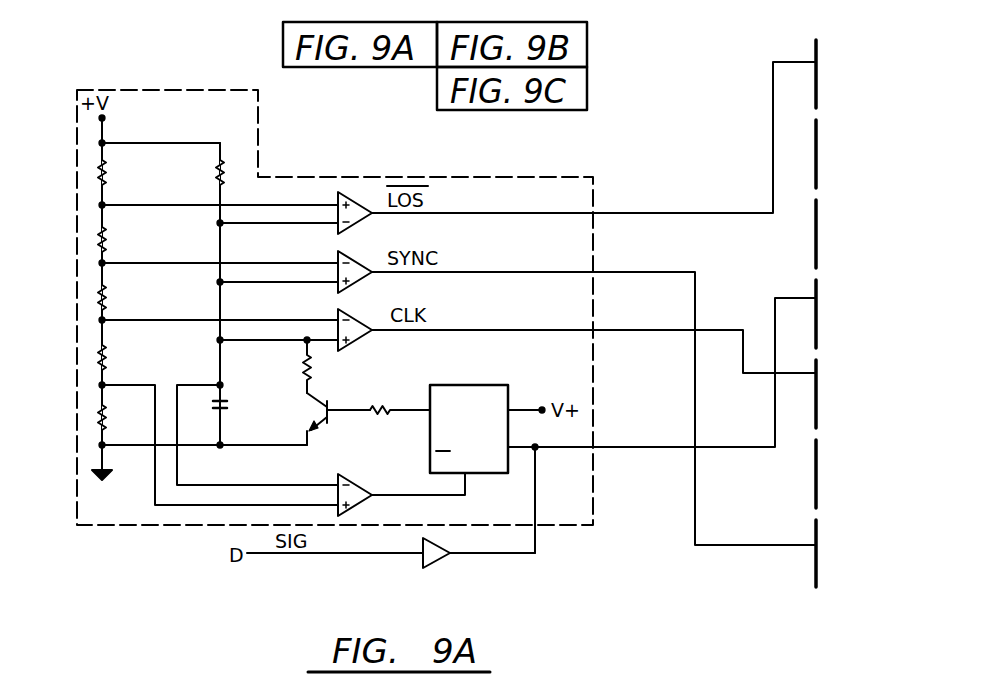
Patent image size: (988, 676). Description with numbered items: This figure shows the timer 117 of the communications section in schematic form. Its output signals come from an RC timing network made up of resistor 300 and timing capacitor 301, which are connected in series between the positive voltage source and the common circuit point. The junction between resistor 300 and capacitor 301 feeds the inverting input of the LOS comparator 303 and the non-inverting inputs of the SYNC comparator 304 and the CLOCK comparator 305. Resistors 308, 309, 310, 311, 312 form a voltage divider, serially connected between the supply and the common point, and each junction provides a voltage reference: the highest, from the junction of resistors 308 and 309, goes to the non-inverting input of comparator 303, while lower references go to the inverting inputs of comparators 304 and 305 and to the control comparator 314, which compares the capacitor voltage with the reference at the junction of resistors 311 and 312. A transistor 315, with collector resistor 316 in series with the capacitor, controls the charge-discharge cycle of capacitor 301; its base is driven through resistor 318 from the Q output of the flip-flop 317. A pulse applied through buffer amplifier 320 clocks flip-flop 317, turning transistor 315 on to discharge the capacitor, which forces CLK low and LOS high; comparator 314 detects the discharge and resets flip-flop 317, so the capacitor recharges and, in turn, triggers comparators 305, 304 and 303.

The timer 117 is at (487, 175).
The resistor 300 is at (218, 162).
The timing capacitor 301 is at (228, 405).
The LOS comparator 303 is at (362, 225).
The SYNC comparator 304 is at (362, 283).
The CLOCK comparator 305 is at (362, 342).
The resistor 308 is at (112, 183).
The resistor 309 is at (108, 243).
The resistor 310 is at (108, 295).
The resistor 311 is at (108, 353).
The resistor 312 is at (98, 412).
The control comparator 314 is at (382, 472).
The transistor 315 is at (318, 418).
The collector resistor 316 is at (295, 367).
The flip-flop 317 is at (495, 385).
The resistor 318 is at (390, 394).
The buffer amplifier 320 is at (438, 560).